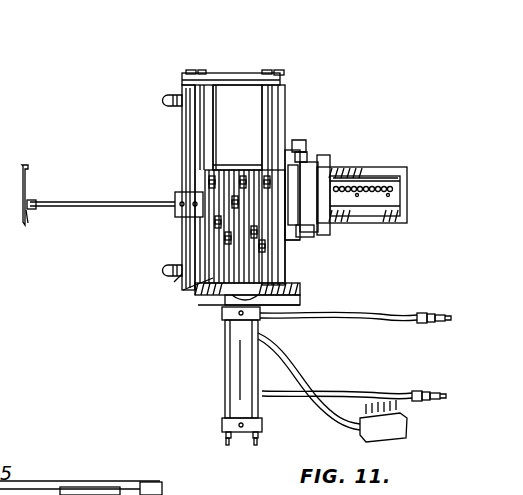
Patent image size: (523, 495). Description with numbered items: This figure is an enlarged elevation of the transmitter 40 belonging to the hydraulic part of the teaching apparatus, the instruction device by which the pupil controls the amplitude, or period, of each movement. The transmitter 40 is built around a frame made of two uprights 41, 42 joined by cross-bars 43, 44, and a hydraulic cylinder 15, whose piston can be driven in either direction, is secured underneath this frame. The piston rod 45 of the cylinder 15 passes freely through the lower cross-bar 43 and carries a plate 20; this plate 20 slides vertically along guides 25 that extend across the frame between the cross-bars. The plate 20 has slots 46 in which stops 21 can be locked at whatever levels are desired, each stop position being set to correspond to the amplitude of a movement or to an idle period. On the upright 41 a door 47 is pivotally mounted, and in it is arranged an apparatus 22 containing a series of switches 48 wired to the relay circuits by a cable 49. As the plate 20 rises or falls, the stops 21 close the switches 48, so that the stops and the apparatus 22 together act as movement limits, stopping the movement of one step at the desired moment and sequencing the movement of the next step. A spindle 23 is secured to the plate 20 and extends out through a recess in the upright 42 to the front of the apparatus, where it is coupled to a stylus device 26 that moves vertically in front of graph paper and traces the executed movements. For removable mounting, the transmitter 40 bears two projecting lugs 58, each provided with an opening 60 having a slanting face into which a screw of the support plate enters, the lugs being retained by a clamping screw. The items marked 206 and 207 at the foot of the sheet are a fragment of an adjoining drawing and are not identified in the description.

The hydraulic cylinder 15 is at (224, 376).
The plate 20 is at (205, 226).
The stops 21 is at (323, 166).
The apparatus 22 is at (389, 188).
The spindle 23 is at (115, 182).
The guides 25 is at (272, 57).
The stylus device 26 is at (45, 179).
The transmitter 40 is at (268, 277).
The upright 41 is at (277, 178).
The upright 42 is at (173, 187).
The lower cross-bar 43 is at (234, 330).
The cross-bar 44 is at (232, 51).
The piston rod 45 is at (300, 299).
The slots 46 is at (176, 307).
The door 47 is at (371, 142).
The switches 48 is at (382, 161).
The cable 49 is at (354, 377).
The projecting lugs 58 is at (131, 169).
The opening 60 is at (138, 296).
The plate 206 is at (81, 467).
The plate 207 is at (117, 471).